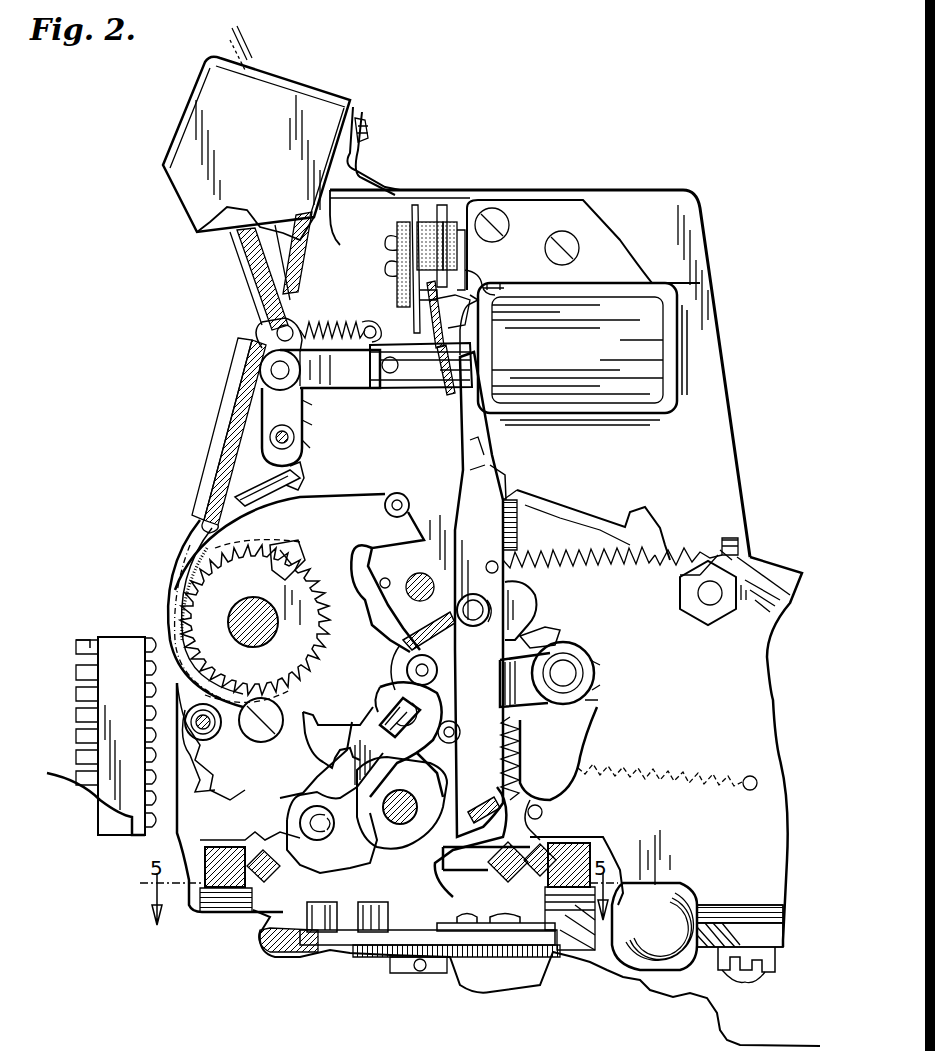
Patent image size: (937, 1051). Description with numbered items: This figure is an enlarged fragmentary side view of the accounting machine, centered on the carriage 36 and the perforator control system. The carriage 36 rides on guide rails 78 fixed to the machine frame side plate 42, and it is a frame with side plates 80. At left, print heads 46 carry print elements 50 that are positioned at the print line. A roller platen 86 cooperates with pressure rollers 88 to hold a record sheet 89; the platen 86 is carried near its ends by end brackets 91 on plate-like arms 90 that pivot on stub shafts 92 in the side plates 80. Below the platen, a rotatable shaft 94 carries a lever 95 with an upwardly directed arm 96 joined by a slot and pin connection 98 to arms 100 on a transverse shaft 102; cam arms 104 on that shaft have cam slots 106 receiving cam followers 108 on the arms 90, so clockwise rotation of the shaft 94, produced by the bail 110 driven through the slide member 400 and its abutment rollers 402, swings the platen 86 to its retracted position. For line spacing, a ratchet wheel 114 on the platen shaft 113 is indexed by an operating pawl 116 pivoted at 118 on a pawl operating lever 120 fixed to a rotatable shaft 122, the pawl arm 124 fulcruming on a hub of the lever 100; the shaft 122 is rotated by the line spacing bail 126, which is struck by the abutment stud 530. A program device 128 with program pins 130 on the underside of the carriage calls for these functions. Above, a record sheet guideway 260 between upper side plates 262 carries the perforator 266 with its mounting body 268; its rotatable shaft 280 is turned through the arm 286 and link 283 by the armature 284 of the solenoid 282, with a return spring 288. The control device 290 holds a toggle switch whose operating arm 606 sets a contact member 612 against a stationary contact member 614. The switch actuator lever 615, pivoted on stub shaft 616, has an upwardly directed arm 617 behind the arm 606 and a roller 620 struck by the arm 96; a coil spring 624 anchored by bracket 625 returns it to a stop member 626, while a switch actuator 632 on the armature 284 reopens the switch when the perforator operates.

The record sheet guideway 260 is at (280, 250).
The upper side plates 262 is at (668, 462).
The solenoid 282 is at (592, 341).
The control device 290 is at (382, 247).
The stationary contact member 614 is at (413, 282).
The contact member 612 is at (453, 314).
The operating arm 606 is at (450, 388).
The armature 284 is at (410, 392).
The switch actuator 632 is at (392, 373).
The upwardly directed arm 617 is at (458, 440).
The return spring 288 is at (335, 326).
The link 283 is at (268, 364).
The arm 286 is at (297, 416).
The rotatable shaft 280 is at (294, 440).
The mounting body 268 is at (296, 470).
The perforator 266 is at (304, 484).
The record sheet 89 is at (190, 545).
The platen 86 is at (176, 600).
The platen supporting arms 90 is at (345, 524).
The ratchet wheel 114 is at (220, 631).
The platen shaft 113 is at (252, 598).
The end brackets 91 is at (283, 542).
The print heads 46 is at (131, 667).
The print elements 50 is at (80, 648).
The pressure rollers 88 is at (180, 708).
The guide rails 78 is at (226, 847).
The operating pawl 116 is at (333, 751).
The cam follower 108 is at (405, 652).
The upwardly directed arm 96 is at (435, 698).
The slot and pin connection 98 is at (394, 706).
The pawl pivot 118 is at (455, 733).
The cam slot 106 is at (448, 640).
The stub shaft 616 is at (490, 585).
The switch actuator lever 615 is at (505, 578).
The coil spring 624 is at (600, 566).
The bracket 625 is at (728, 538).
The stop member 626 is at (518, 512).
The cam arms 104 is at (525, 608).
The pawl arm 124 is at (548, 630).
The arms 100 is at (541, 694).
The transverse shaft 102 is at (568, 668).
The carriage side plates 80 is at (714, 684).
The carriage 36 is at (783, 673).
The lever 95 is at (297, 810).
The rotatable shaft 94 is at (328, 830).
The stub shafts 92 is at (395, 818).
The roller 620 is at (470, 815).
The pawl operating lever 120 is at (490, 870).
The rotatable shaft 122 is at (455, 896).
The abutment rollers 402 is at (355, 915).
The abutment stud 530 is at (395, 895).
The bail 110 is at (345, 948).
The line spacing bail 126 is at (378, 960).
The slide member 400 is at (484, 945).
The machine frame side plate 42 is at (665, 995).
The program pins 130 is at (746, 977).
The program device 128 is at (784, 966).